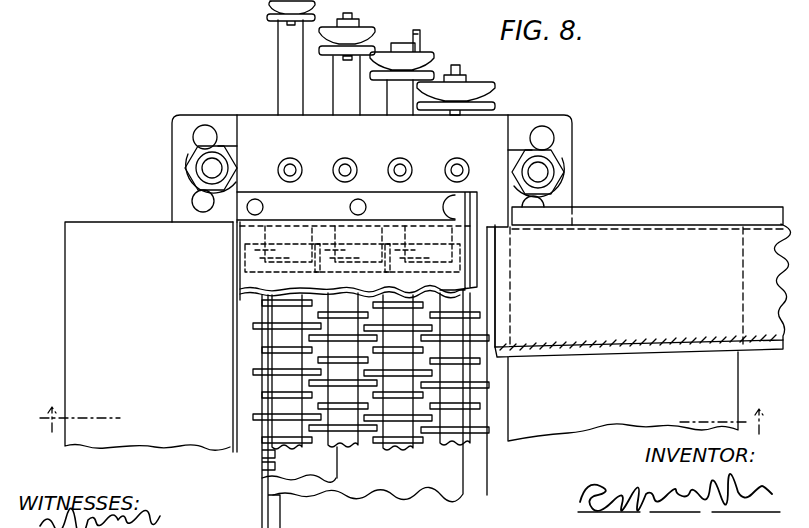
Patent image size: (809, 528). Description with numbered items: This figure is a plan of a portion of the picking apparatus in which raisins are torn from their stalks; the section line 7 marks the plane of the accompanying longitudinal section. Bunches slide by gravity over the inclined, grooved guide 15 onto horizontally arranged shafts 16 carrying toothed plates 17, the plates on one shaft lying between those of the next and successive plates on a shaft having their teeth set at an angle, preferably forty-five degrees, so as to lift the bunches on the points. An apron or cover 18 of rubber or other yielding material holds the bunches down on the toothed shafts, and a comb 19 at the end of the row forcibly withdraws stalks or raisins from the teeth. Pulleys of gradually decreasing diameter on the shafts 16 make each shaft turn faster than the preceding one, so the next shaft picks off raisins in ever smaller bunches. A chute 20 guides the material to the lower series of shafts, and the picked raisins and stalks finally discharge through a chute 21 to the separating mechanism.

The section line 7 is at (403, 421).
The guide 15 is at (643, 282).
The shaft 16 is at (290, 97).
The toothed plate 17 is at (432, 432).
The apron or cover 18 is at (247, 272).
The comb 19 is at (336, 468).
The chute 20 is at (149, 336).
The chute 21 is at (623, 396).